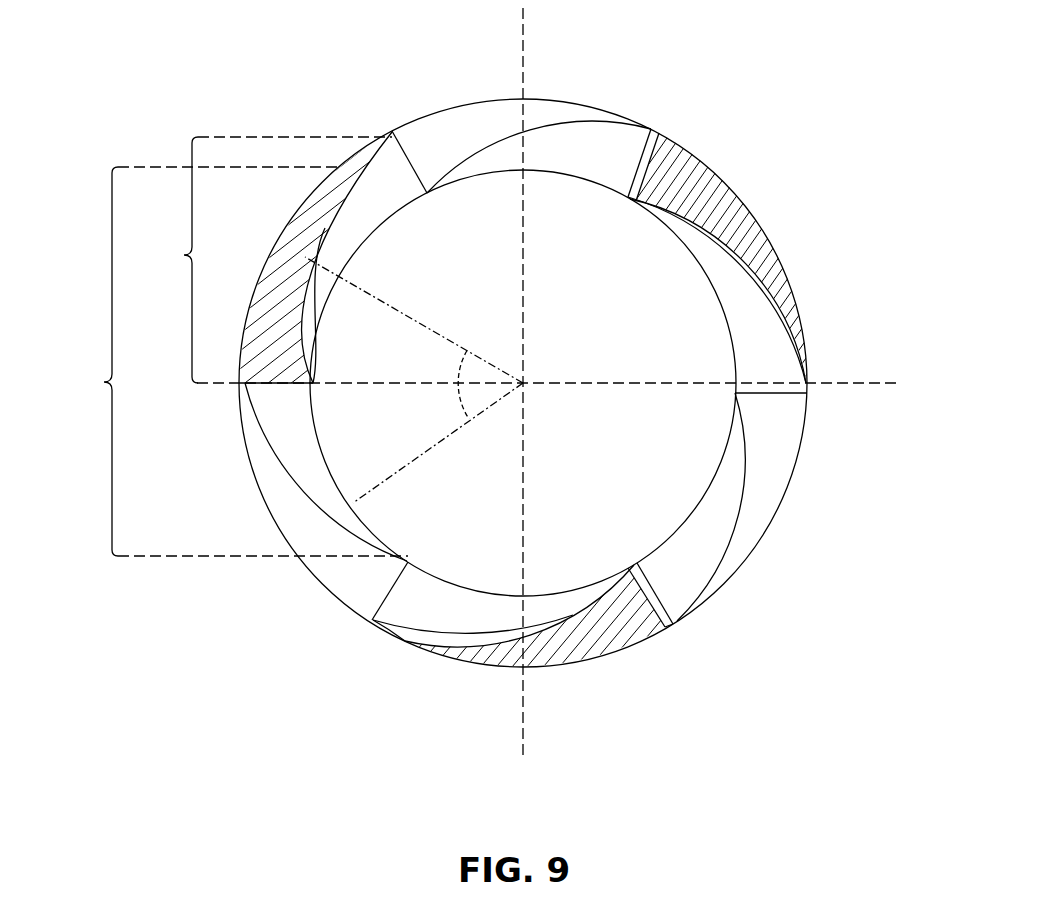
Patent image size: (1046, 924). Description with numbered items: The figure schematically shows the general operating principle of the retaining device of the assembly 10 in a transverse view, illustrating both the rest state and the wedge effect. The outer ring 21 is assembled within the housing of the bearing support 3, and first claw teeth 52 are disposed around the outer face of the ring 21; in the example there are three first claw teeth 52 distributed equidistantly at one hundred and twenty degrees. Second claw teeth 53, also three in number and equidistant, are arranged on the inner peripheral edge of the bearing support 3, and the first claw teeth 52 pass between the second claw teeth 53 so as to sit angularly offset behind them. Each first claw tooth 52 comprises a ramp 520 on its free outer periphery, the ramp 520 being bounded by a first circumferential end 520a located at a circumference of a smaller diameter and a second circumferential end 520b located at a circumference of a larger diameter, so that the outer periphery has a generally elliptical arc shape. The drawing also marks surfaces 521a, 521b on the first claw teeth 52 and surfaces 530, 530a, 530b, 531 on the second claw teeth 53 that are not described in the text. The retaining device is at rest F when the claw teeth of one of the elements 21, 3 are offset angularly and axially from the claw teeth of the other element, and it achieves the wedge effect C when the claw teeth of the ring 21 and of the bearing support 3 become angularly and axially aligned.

The assembly 10 is at (568, 57).
The bearing support 3 is at (683, 146).
The outer ring 21 is at (505, 138).
The first claw teeth 52 is at (487, 160).
The second claw teeth 53 is at (737, 213).
The lug outer surface 530 is at (703, 183).
The lug tip end 530a is at (410, 642).
The lug thick end 530b is at (643, 655).
The lug inner surface 531 is at (760, 265).
The ramp 520 is at (807, 378).
The first circumferential end 520a is at (737, 395).
The second circumferential end 520b is at (657, 640).
The cam sliding surface 521a is at (742, 513).
The cam sliding surface 521b is at (808, 367).
The wedge effect C is at (183, 255).
The rest F is at (103, 382).